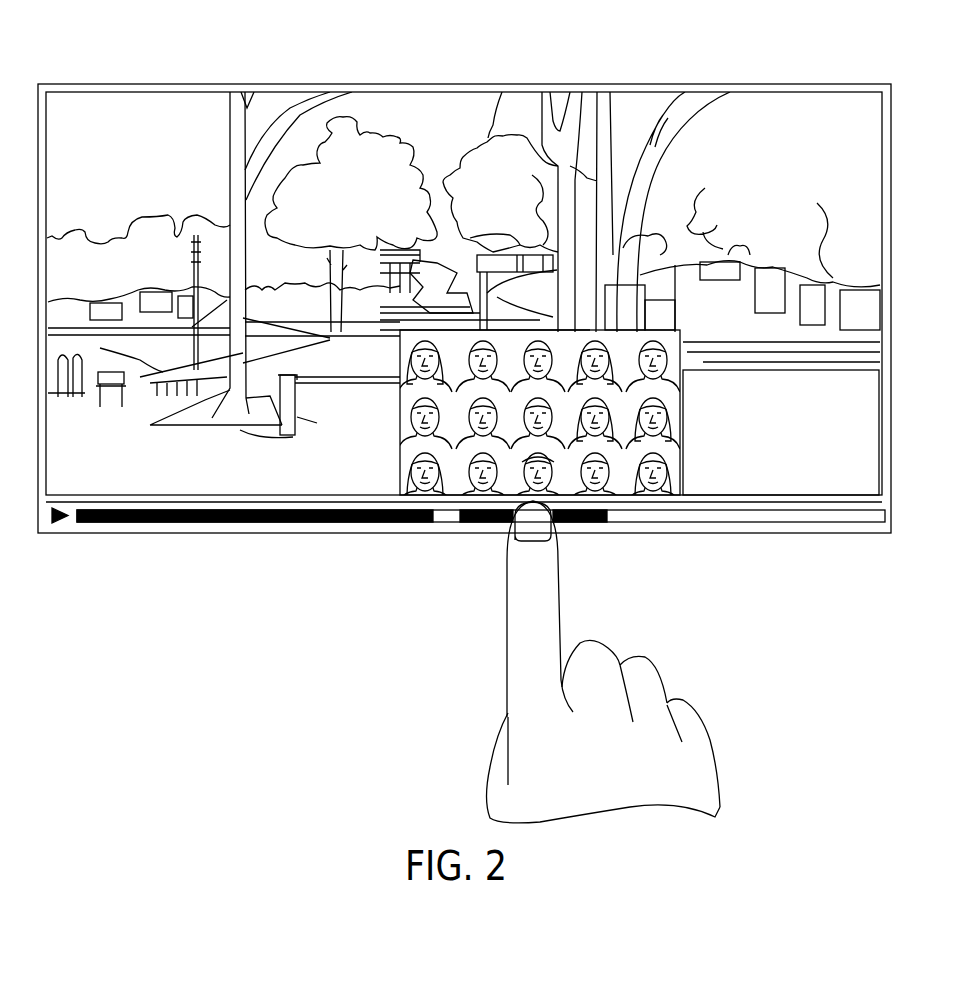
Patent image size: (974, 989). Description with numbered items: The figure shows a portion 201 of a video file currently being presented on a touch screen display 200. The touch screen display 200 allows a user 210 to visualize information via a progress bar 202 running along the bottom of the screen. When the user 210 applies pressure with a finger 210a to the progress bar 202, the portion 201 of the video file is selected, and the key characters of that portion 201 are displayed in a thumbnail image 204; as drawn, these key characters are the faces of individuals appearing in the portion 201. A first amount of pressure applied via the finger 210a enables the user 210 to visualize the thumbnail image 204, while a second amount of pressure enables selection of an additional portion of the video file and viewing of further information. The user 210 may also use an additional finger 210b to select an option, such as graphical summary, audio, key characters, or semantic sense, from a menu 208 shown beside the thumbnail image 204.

The touch screen display 200 is at (93, 83).
The portion of a video file 201 is at (320, 110).
The progress bar 202 is at (202, 523).
The thumbnail image 204 is at (401, 449).
The menu 208 is at (867, 465).
The user 210 is at (490, 687).
The finger 210a is at (513, 623).
The additional finger 210b is at (593, 647).